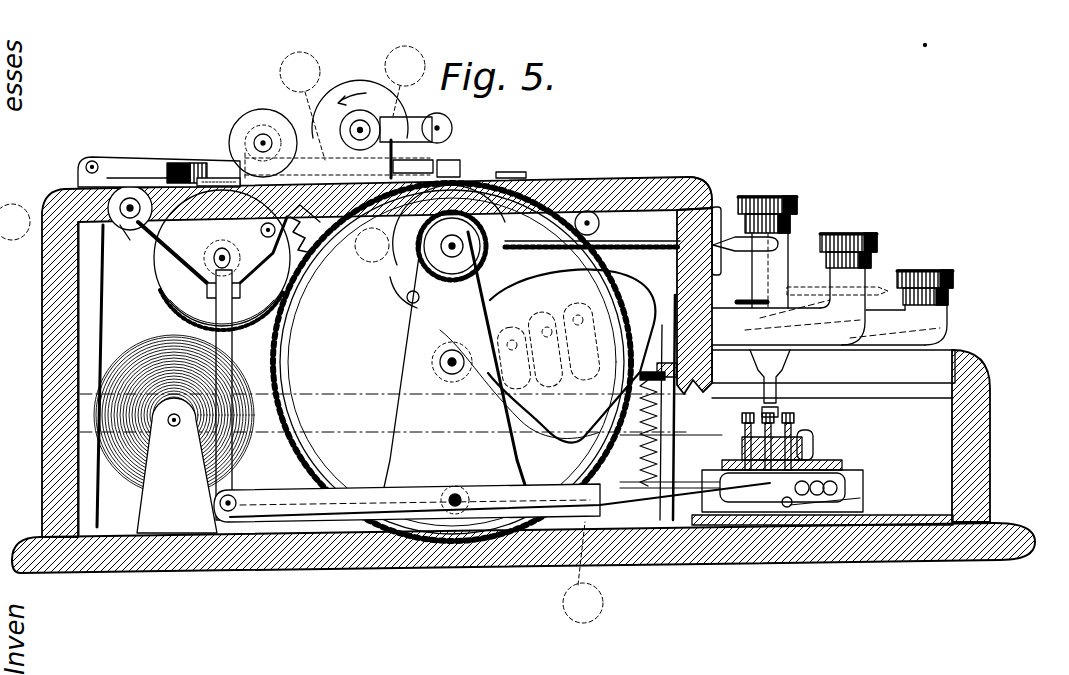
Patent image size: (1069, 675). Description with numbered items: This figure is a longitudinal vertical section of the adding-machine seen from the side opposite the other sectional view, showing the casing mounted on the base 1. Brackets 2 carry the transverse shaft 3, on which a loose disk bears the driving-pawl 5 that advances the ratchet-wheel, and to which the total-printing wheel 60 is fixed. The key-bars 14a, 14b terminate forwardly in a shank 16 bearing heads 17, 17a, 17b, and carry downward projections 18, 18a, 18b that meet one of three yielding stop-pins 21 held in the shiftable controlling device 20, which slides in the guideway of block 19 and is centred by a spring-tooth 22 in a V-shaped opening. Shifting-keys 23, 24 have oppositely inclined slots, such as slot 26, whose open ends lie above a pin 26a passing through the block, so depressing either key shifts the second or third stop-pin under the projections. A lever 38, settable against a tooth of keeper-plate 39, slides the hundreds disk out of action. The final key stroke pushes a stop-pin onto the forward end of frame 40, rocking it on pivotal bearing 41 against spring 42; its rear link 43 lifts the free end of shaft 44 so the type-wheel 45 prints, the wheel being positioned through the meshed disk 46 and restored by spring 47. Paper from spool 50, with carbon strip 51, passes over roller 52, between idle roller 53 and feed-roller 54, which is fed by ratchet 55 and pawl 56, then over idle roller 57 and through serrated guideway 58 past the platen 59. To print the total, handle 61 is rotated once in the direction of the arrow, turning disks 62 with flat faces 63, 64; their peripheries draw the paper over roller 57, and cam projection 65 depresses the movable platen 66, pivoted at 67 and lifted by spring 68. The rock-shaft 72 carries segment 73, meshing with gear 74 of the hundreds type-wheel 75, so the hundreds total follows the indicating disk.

The base 1 is at (280, 553).
The brackets 2 is at (445, 412).
The transverse shaft 3 is at (450, 372).
The driving-pawl 5 is at (660, 185).
The key-bar 14a is at (795, 318).
The key-bar 14b is at (907, 327).
The shank 16 is at (768, 274).
The head 17 is at (760, 200).
The head 17a is at (838, 233).
The head 17b is at (917, 270).
The downwardly-extending projection 18 is at (782, 398).
The projection 18a is at (778, 378).
The projection 18b is at (940, 310).
The block 19 is at (857, 493).
The shiftable controlling device 20 is at (817, 457).
The stop-pins 21 is at (743, 435).
The spring-tooth 22 is at (787, 507).
The shifting-key 23 is at (650, 487).
The shifting-key 24 is at (960, 385).
The inclined slot 26 is at (810, 432).
The pin 26a is at (793, 505).
The lever 38 is at (700, 203).
The keeper-plate 39 is at (706, 243).
The frame 40 is at (493, 495).
The pivotal bearing 41 is at (452, 498).
The spring 42 is at (632, 545).
The link 43 is at (262, 373).
The shaft 44 is at (215, 268).
The type-wheel 45 is at (170, 272).
The disk 46 is at (78, 256).
The spring 47 is at (42, 230).
The spool 50 is at (117, 462).
The carbon strip 51 is at (583, 176).
The roller 52 is at (62, 200).
The idle roller 53 is at (258, 122).
The feed-roller 54 is at (300, 226).
The ratchet 55 is at (240, 265).
The pawl 56 is at (258, 345).
The idle roller 57 is at (325, 239).
The serrated guideway 58 is at (500, 177).
The platen 59 is at (217, 181).
The total-printing wheel 60 is at (452, 362).
The handle 61 is at (437, 114).
The disks 62 is at (338, 92).
The flat face 63 is at (302, 106).
The flat face 64 is at (454, 128).
The cam projection 65 is at (405, 81).
The movable platen 66 is at (457, 163).
The pivot 67 is at (92, 160).
The spring 68 is at (132, 198).
The rock-shaft 72 is at (583, 572).
The segment 73 is at (527, 272).
The gear 74 is at (412, 256).
The type-wheel 75 is at (410, 302).